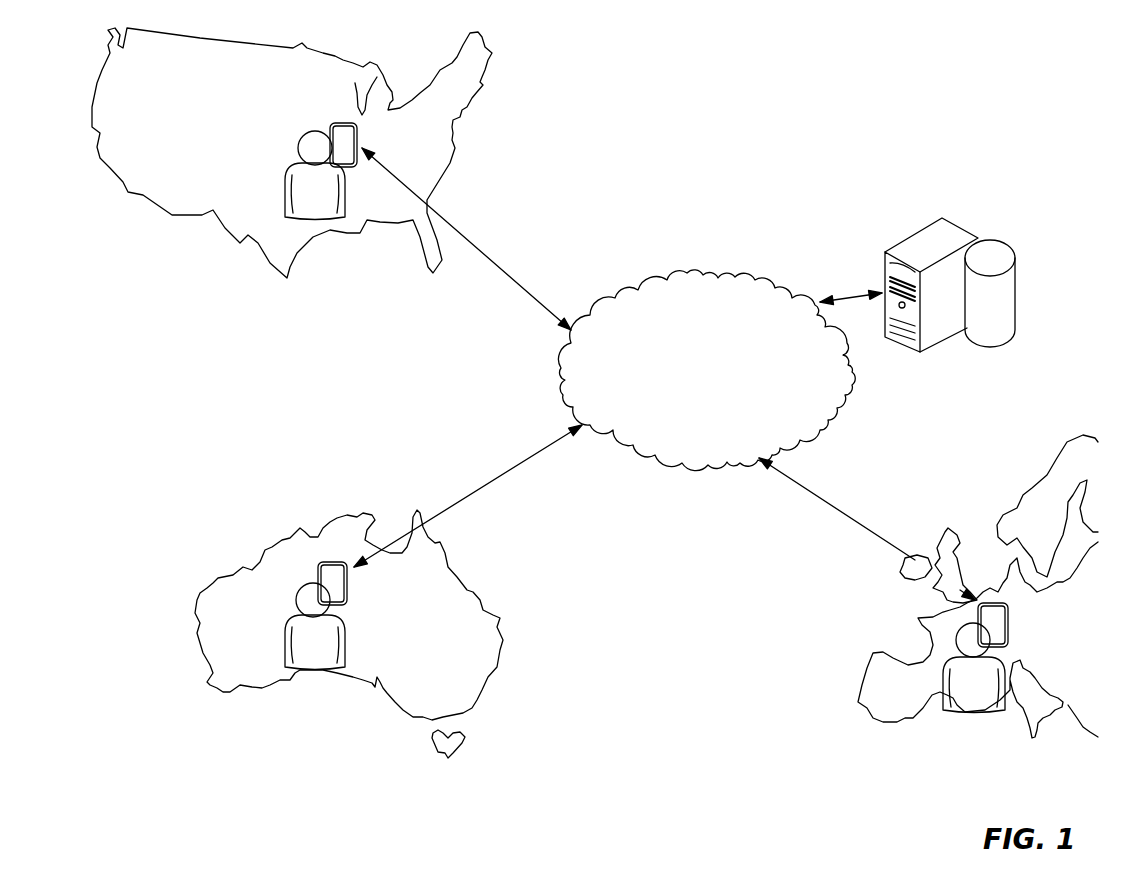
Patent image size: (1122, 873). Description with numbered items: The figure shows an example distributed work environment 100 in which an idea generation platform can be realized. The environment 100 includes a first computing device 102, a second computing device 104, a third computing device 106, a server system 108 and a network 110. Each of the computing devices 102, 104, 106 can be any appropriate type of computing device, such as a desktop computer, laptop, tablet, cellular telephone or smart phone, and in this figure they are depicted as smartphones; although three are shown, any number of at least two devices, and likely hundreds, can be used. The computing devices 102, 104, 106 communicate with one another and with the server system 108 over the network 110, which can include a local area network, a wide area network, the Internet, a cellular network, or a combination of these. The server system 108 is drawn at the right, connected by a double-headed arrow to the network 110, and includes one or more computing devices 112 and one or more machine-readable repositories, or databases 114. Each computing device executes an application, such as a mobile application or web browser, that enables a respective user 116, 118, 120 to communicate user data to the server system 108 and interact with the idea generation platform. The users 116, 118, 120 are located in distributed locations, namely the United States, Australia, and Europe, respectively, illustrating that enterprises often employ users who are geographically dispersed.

The distributed work environment 100 is at (778, 170).
The first computing device 102 is at (357, 138).
The second computing device 104 is at (347, 592).
The third computing device 106 is at (1008, 630).
The server system 108 is at (1052, 306).
The network 110 is at (687, 273).
The computing device 112 is at (962, 226).
The database 114 is at (1017, 258).
The user 116 is at (297, 145).
The user 118 is at (302, 668).
The user 120 is at (960, 710).